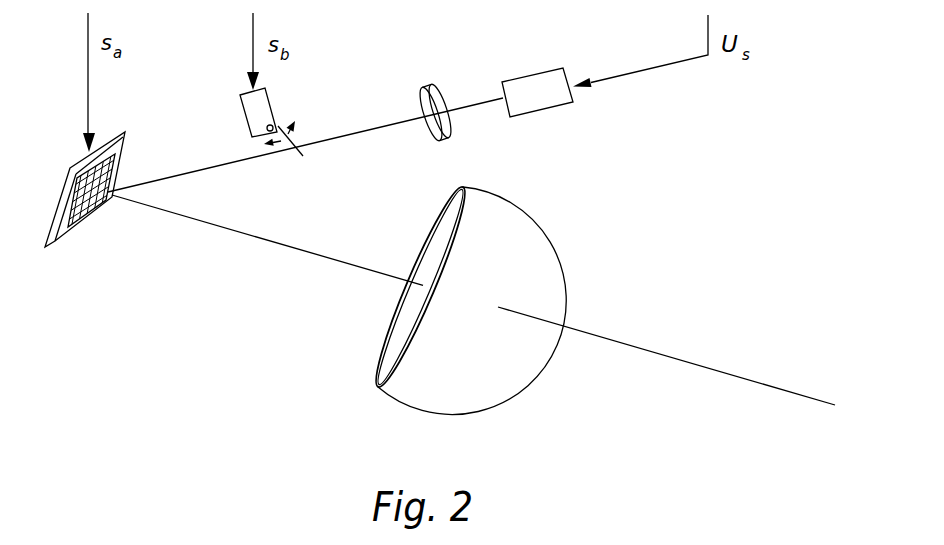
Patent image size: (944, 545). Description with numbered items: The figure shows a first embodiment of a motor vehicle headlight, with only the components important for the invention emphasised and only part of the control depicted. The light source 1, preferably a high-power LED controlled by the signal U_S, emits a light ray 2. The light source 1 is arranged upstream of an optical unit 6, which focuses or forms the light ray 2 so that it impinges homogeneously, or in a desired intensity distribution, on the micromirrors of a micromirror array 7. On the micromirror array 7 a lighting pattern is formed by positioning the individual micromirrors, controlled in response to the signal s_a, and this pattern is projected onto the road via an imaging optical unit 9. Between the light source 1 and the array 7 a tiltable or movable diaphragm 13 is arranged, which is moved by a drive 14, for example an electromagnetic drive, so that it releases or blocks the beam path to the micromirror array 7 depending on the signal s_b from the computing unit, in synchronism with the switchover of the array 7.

The light source 1 is at (545, 93).
The light ray 2 is at (377, 127).
The optical unit 6 is at (445, 128).
The micromirror array 7 is at (62, 233).
The imaging optical unit 9 is at (428, 350).
The diaphragm 13 is at (297, 150).
The drive 14 is at (268, 105).